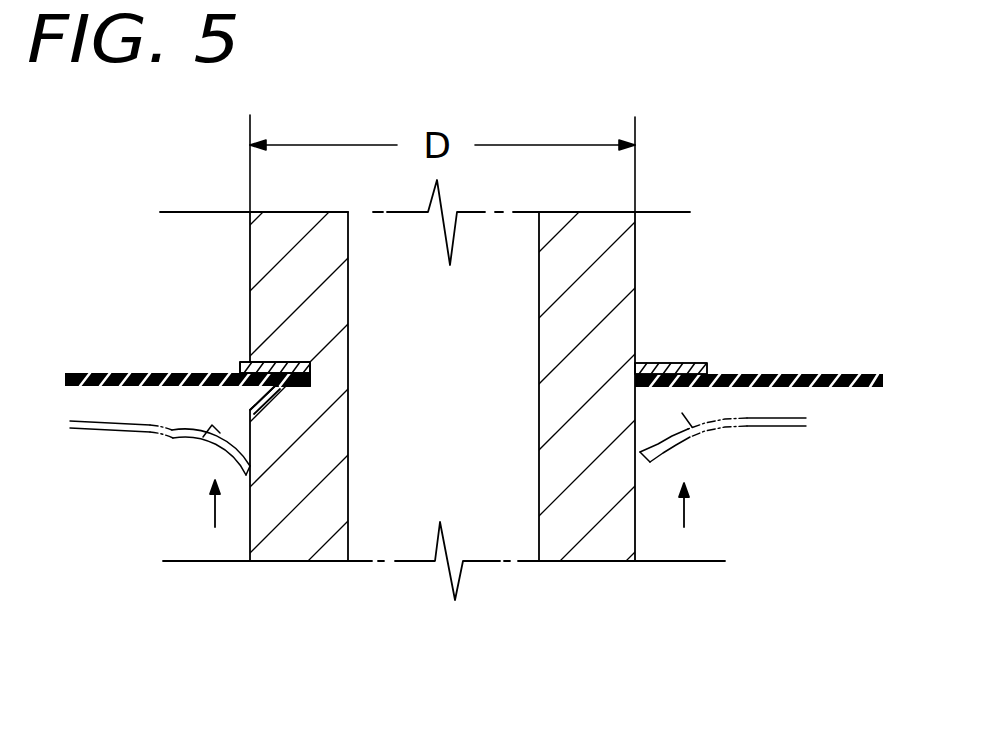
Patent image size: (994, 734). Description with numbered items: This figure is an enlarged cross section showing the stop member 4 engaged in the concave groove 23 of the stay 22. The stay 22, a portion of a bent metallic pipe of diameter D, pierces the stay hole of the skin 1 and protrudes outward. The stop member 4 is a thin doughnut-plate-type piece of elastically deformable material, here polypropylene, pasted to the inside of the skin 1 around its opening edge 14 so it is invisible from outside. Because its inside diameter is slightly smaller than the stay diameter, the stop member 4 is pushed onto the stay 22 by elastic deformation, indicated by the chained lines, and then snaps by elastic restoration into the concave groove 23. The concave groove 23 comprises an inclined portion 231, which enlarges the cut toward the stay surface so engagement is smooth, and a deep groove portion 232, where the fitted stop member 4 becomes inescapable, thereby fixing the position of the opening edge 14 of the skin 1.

The skin 1 is at (87, 370).
The stop member 4 is at (237, 368).
The opening edge 14 is at (310, 386).
The stay 22 is at (278, 553).
The concave groove 23 is at (473, 368).
The inclined portion 231 is at (268, 362).
The deep groove portion 232 is at (307, 362).